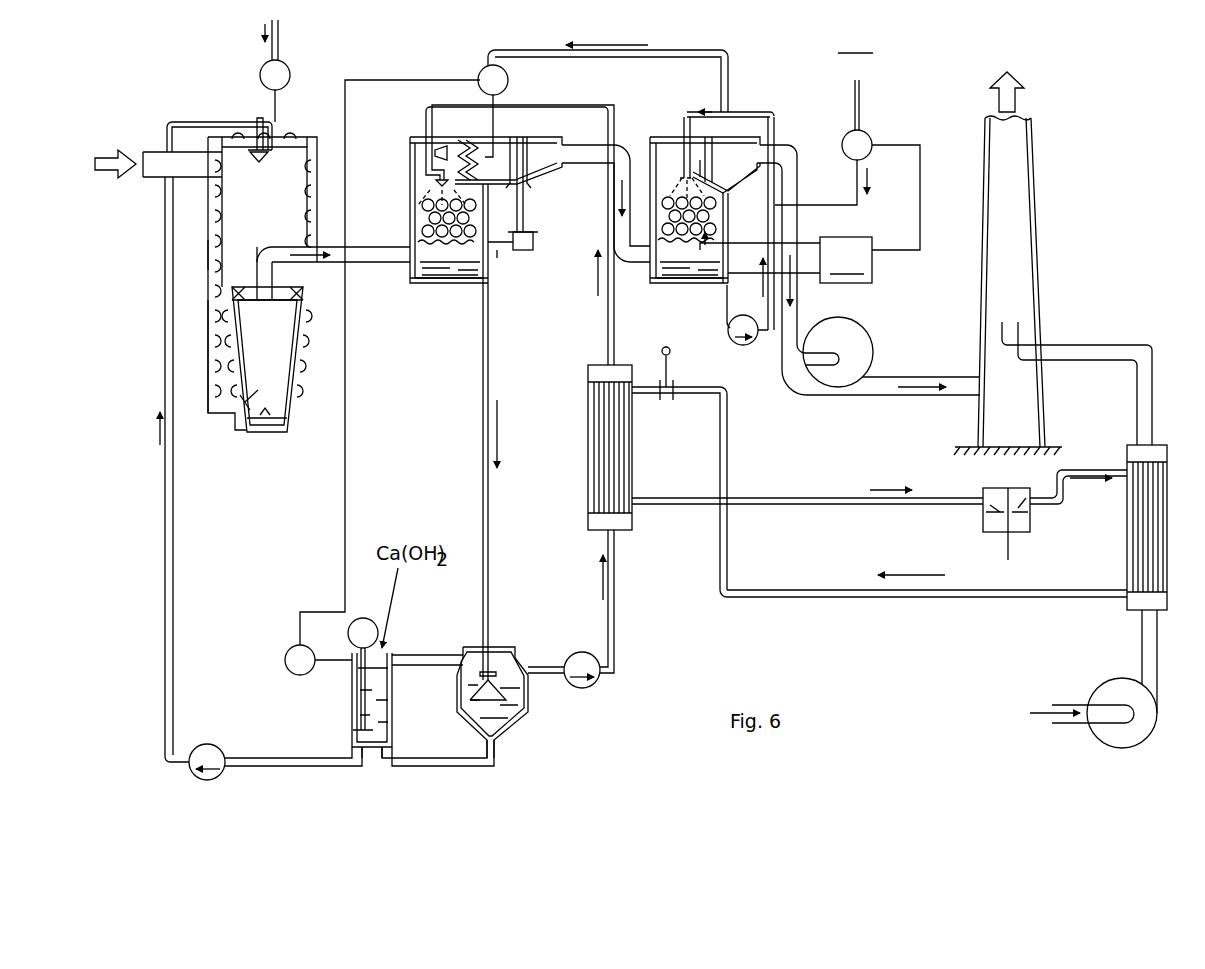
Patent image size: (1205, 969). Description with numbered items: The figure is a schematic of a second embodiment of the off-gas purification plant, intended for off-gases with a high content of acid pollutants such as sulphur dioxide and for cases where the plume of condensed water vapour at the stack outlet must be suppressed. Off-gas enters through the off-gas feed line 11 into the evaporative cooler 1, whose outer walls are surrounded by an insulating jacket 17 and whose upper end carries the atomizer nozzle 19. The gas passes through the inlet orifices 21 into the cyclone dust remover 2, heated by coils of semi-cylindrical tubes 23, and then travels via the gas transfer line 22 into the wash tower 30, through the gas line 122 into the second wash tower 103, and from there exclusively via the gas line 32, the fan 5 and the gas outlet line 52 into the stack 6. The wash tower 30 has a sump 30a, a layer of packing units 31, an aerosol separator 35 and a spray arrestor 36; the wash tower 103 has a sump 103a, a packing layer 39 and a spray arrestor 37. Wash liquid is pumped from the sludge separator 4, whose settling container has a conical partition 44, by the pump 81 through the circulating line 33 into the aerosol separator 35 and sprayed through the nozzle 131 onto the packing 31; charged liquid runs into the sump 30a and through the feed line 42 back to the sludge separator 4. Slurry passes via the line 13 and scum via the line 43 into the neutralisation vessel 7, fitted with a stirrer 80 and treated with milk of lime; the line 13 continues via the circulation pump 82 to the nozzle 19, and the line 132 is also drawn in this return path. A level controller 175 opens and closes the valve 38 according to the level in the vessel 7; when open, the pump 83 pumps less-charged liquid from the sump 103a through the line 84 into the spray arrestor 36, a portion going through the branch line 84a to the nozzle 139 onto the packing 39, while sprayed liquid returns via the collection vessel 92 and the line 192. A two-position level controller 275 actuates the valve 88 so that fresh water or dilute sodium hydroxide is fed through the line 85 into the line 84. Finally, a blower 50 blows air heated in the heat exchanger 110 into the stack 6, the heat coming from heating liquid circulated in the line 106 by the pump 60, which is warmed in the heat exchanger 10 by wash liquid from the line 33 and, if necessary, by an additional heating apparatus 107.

The evaporative cooler 1 is at (262, 281).
The cyclone dust remover 2 is at (267, 359).
The sludge separator 4 is at (532, 702).
The fan 5 is at (854, 334).
The stack 6 is at (1041, 403).
The neutralisation vessel 7 is at (352, 714).
The heat exchanger 10 is at (632, 462).
The off-gas feed line 11 is at (167, 142).
The line 13 is at (450, 758).
The insulating jacket 17 is at (207, 258).
The atomizer nozzle 19 is at (262, 165).
The inlet orifices 21 is at (258, 305).
The gas transfer line 22 is at (362, 265).
The coils of semi-cylindrical tubes 23 is at (212, 385).
The wash tower 30 is at (406, 142).
The sump 30a is at (462, 283).
The layer of packing units 31 is at (418, 214).
The gas line 32 is at (798, 170).
The circulating line 33 is at (616, 580).
The aerosol separator 35 is at (470, 142).
The spray arrestor 36 is at (521, 140).
The spray arrestor 37 is at (713, 160).
The valve 38 is at (478, 72).
The packing layer 39 is at (724, 220).
The feed line 42 is at (482, 450).
The line 43 is at (434, 654).
The conical partition 44 is at (494, 652).
The blower 50 is at (1101, 686).
The gas outlet line 52 is at (922, 376).
The pump 60 is at (984, 524).
The stirrer 80 is at (368, 700).
The pump 81 is at (596, 684).
The circulation pump 82 is at (222, 752).
The pump 83 is at (746, 315).
The line 84 is at (714, 50).
The branch line 84a is at (688, 112).
The line 85 is at (861, 104).
The valve 88 is at (290, 70).
The collection vessel 92 is at (538, 250).
The second wash tower 103 is at (654, 134).
The sump 103a is at (680, 283).
The line 106 is at (784, 497).
The additional heating apparatus 107 is at (676, 380).
The heat exchanger 110 is at (1128, 602).
The gas line 122 is at (622, 144).
The nozzle 131 is at (298, 757).
The return line 132 is at (176, 588).
The nozzle 139 is at (686, 178).
The level controller 175 is at (286, 660).
The line 192 is at (498, 256).
The two-position level controller 275 is at (810, 221).